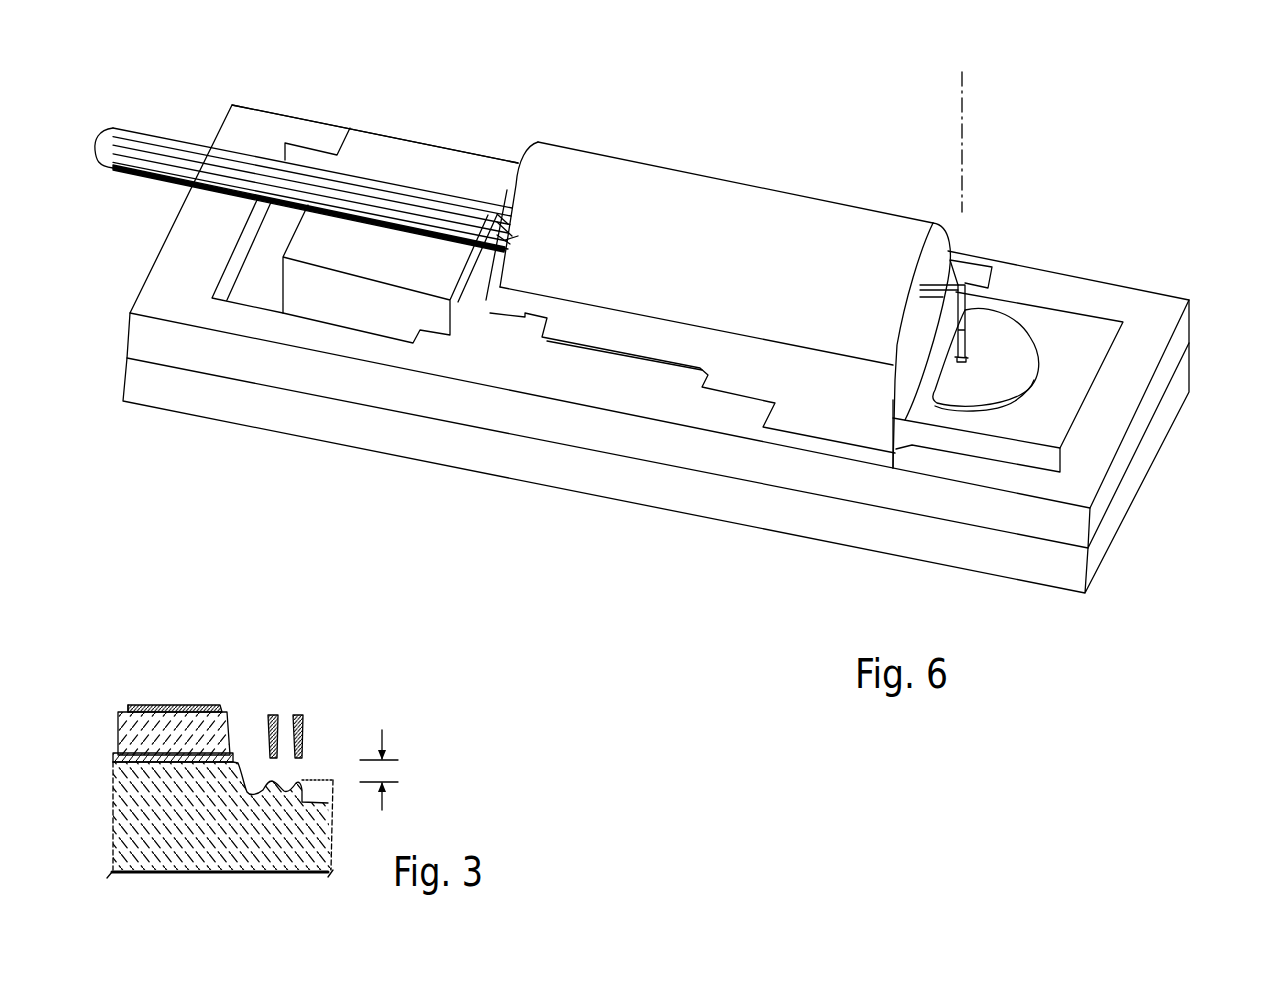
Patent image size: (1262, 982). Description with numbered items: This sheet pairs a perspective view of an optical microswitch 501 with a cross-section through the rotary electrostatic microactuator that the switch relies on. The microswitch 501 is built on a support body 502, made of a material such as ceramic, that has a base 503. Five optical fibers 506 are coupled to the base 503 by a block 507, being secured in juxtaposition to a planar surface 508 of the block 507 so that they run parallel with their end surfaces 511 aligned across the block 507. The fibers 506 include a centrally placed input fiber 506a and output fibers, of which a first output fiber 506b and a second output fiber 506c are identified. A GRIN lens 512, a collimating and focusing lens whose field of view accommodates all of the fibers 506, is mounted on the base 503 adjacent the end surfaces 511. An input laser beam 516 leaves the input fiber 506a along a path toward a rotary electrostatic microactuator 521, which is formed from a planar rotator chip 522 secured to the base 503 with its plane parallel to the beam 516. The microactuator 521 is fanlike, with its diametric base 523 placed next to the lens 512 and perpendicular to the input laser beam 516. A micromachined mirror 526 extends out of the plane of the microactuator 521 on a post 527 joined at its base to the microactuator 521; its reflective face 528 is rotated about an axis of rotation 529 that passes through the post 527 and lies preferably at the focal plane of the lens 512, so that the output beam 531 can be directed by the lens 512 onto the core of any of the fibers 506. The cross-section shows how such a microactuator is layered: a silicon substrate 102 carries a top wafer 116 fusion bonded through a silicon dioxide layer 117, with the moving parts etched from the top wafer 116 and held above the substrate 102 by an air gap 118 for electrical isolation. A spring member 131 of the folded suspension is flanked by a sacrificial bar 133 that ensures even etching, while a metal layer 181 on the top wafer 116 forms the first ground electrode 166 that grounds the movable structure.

In FIG. 6, the optical microswitch 501 is at (1141, 236).
In FIG. 6, the support body 502 is at (1196, 327).
In FIG. 6, the base 503 is at (1100, 512).
In FIG. 6, the optical fibers 506 is at (271, 164).
In FIG. 6, the input fiber 506a is at (118, 138).
In FIG. 6, the first output fiber 506b is at (158, 138).
In FIG. 6, the second output fiber 506c is at (158, 173).
In FIG. 6, the block 507 is at (320, 307).
In FIG. 6, the planar surface 508 is at (382, 153).
In FIG. 6, the end surfaces 511 is at (508, 214).
In FIG. 6, the GRIN lens 512 is at (713, 175).
In FIG. 6, the input laser beam 516 is at (505, 224).
In FIG. 6, the rotary electrostatic microactuator 521 is at (1017, 342).
In FIG. 6, the planar rotator chip 522 is at (1022, 460).
In FIG. 6, the diametric base 523 is at (905, 440).
In FIG. 6, the micromachined mirror 526 is at (980, 263).
In FIG. 6, the post 527 is at (963, 362).
In FIG. 6, the reflective face 528 is at (922, 308).
In FIG. 6, the axis of rotation 529 is at (965, 90).
In FIG. 6, the output beam 531 is at (480, 275).
In FIG. 3, the substrate 102 is at (143, 820).
In FIG. 3, the top wafer 116 is at (128, 727).
In FIG. 3, the silicon dioxide layer 117 is at (113, 755).
In FIG. 3, the air gap 118 is at (382, 730).
In FIG. 3, the first spring member 131 is at (282, 713).
In FIG. 3, the sacrificial bar 133 is at (305, 718).
In FIG. 3, the first ground electrode 166 is at (128, 700).
In FIG. 3, the metal layer 181 is at (163, 706).